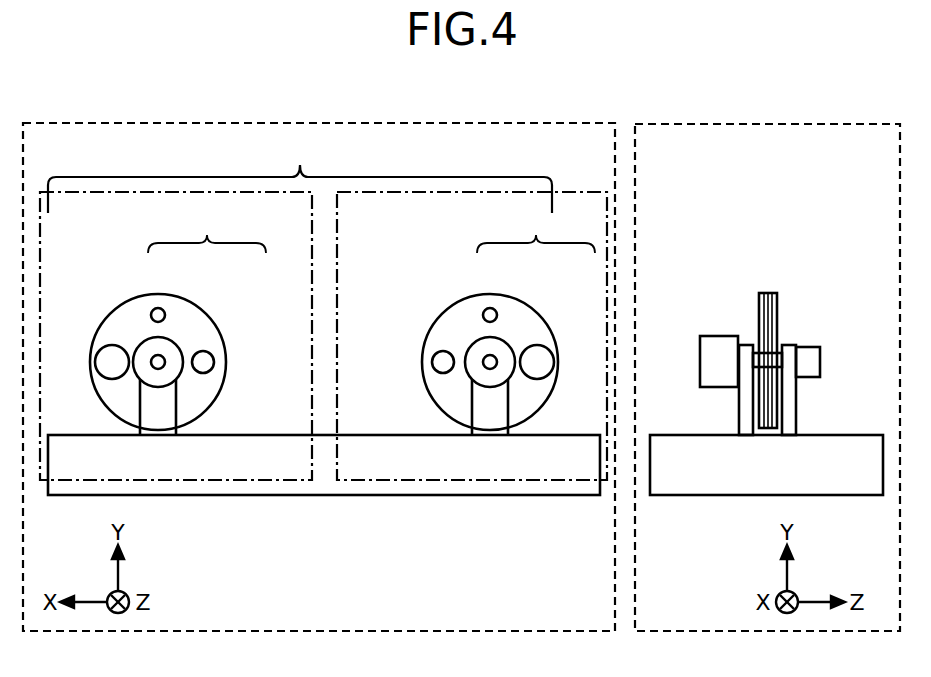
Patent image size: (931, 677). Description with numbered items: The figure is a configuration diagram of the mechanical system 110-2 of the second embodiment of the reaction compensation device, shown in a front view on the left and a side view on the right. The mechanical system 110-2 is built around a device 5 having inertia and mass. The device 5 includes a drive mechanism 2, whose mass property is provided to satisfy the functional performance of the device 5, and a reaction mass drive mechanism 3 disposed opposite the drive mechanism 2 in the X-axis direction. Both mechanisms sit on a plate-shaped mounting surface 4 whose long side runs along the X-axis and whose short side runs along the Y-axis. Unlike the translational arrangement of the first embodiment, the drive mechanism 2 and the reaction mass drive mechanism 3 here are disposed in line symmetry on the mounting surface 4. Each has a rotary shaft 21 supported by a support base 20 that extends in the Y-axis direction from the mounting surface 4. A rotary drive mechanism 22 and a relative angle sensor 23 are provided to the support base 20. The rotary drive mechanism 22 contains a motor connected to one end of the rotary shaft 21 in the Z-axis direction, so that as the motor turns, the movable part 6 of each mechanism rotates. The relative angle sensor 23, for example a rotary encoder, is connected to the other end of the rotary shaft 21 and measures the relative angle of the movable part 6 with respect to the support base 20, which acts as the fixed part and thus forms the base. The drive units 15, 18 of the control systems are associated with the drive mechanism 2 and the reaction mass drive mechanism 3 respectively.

The mechanical system 110-2 is at (487, 124).
The device 5 is at (300, 175).
The drive mechanism 2 is at (176, 336).
The reaction mass drive mechanism 3 is at (472, 336).
The mounting surface 4 is at (63, 457).
The movable part 6 is at (157, 294).
The rotary drive mechanism 22 is at (173, 342).
The rotary shaft 21 is at (155, 352).
The support base 20 is at (162, 410).
The relative angle sensor 23 is at (806, 357).
The drive unit 15 is at (259, 481).
The drive unit 18 is at (528, 481).